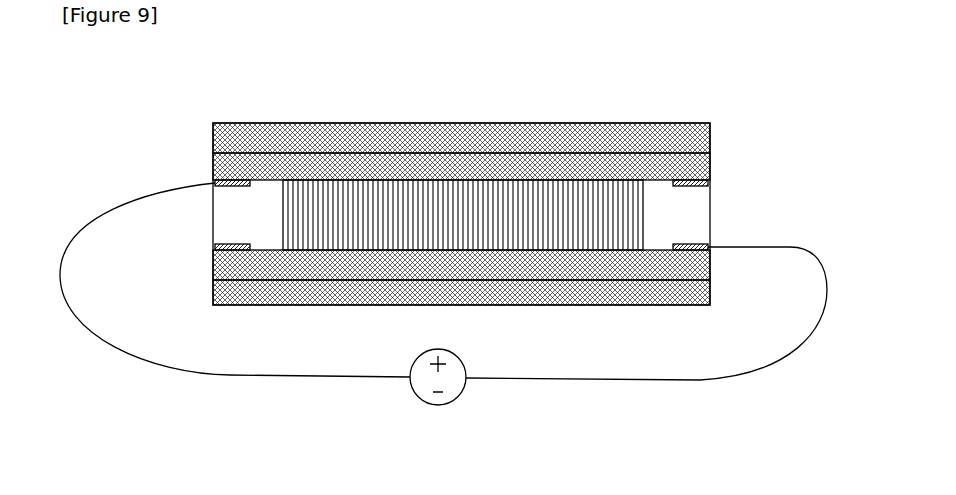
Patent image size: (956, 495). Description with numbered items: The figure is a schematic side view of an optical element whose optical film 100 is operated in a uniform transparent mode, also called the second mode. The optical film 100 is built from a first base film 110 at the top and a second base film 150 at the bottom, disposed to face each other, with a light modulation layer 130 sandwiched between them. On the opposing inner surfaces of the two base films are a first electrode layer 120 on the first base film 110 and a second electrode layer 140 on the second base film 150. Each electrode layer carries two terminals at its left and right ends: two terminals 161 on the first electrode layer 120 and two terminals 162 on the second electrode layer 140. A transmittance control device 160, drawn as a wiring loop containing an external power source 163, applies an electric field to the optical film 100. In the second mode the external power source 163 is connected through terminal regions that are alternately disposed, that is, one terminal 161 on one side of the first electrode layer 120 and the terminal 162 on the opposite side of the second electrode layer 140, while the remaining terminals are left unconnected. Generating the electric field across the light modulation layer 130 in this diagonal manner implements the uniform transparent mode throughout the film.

The optical film 100 is at (182, 82).
The first base film 110 is at (710, 138).
The first electrode layer 120 is at (710, 165).
The light modulation layer 130 is at (643, 215).
The second electrode layer 140 is at (710, 265).
The second base film 150 is at (710, 292).
The transmittance control device 160 is at (250, 375).
The terminals on the first electrode layer 161 is at (215, 182).
The terminals on the second electrode layer 162 is at (215, 247).
The external power source 163 is at (440, 405).